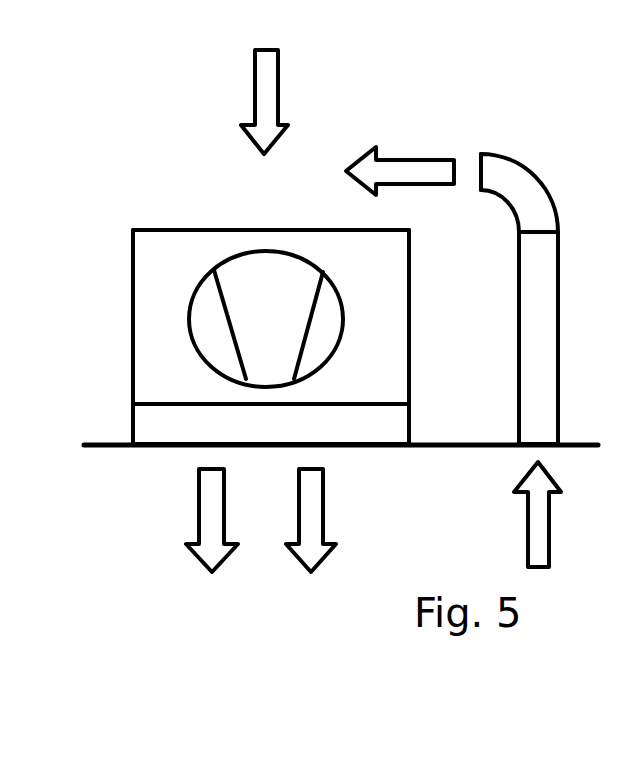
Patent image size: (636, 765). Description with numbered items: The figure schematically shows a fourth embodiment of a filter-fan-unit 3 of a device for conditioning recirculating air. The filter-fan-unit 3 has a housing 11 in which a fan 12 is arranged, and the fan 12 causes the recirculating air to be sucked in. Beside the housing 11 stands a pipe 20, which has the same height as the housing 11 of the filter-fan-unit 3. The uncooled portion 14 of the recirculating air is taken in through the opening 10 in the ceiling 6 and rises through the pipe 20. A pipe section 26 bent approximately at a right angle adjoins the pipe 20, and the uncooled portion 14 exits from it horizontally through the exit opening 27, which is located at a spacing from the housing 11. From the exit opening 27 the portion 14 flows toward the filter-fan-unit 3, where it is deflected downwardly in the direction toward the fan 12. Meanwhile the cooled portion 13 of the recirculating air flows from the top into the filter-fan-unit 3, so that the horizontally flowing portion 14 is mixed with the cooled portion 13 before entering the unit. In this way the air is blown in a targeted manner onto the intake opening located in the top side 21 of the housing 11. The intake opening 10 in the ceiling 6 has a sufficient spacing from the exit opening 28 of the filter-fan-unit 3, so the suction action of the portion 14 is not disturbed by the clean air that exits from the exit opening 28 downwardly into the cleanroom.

The filter-fan-unit 3 is at (163, 167).
The ceiling 6 is at (457, 443).
The opening in the ceiling 10 is at (533, 442).
The housing 11 is at (130, 282).
The fan 12 is at (268, 298).
The cooled portion of the recirculating air 13 is at (268, 72).
The uncooled portion of the recirculating air 14 is at (412, 173).
The pipe 20 is at (540, 242).
The top side of the housing 21 is at (172, 228).
The pipe section 26 is at (503, 173).
The exit opening 27 is at (478, 147).
The exit opening of the filter-fan-unit 28 is at (157, 443).